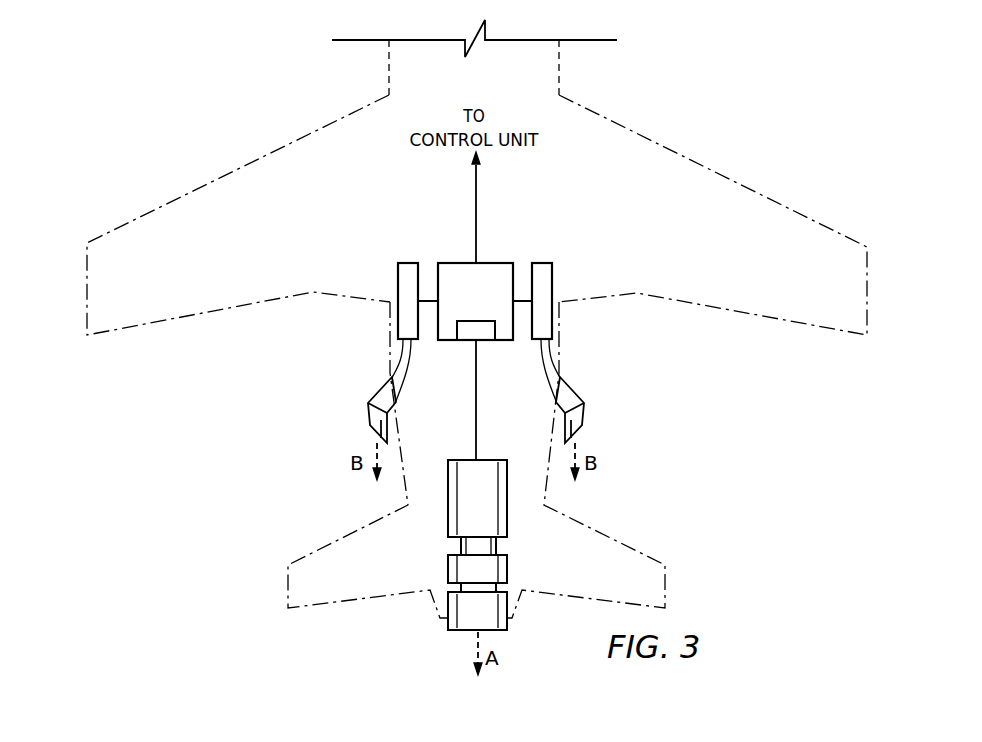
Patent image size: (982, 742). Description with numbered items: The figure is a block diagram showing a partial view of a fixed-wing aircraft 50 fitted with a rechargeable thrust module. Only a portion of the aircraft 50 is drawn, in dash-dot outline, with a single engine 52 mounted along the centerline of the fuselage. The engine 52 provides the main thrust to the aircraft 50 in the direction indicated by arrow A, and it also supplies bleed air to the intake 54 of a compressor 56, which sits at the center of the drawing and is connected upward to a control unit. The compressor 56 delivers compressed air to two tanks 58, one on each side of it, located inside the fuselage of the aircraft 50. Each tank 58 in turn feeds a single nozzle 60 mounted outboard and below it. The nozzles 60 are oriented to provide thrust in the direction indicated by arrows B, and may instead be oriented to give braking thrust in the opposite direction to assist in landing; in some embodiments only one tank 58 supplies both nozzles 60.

The aircraft 50 is at (735, 99).
The engine 52 is at (432, 546).
The intake 54 is at (478, 321).
The compressor 56 is at (495, 263).
The tank 58 is at (408, 263).
The nozzle 60 is at (368, 406).